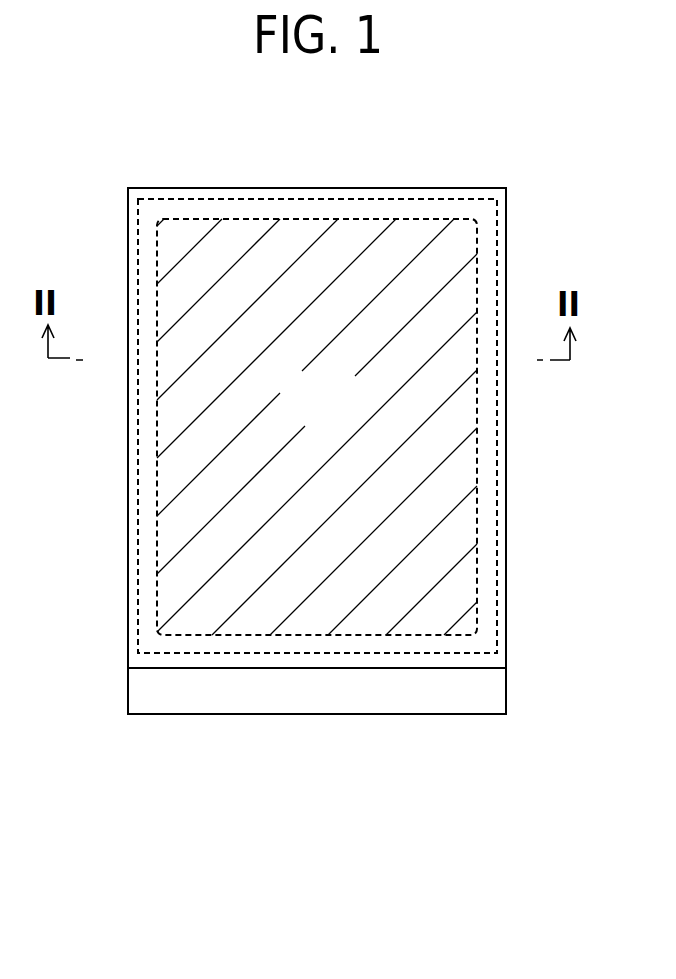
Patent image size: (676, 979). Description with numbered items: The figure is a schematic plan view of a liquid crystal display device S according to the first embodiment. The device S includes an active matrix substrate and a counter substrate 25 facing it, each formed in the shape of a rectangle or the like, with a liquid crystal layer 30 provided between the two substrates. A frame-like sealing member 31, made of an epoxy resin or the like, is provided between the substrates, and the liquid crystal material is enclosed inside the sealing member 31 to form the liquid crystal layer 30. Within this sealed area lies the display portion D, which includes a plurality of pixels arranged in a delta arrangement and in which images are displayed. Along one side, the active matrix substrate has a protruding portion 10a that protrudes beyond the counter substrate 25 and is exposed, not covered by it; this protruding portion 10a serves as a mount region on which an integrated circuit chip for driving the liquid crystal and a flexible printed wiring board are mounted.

The liquid crystal display device S is at (142, 142).
The liquid crystal layer 30 is at (297, 258).
The sealing member 31 is at (157, 520).
The counter substrate 25 is at (437, 530).
The display portion D is at (317, 400).
The protruding portion 10a is at (118, 667).